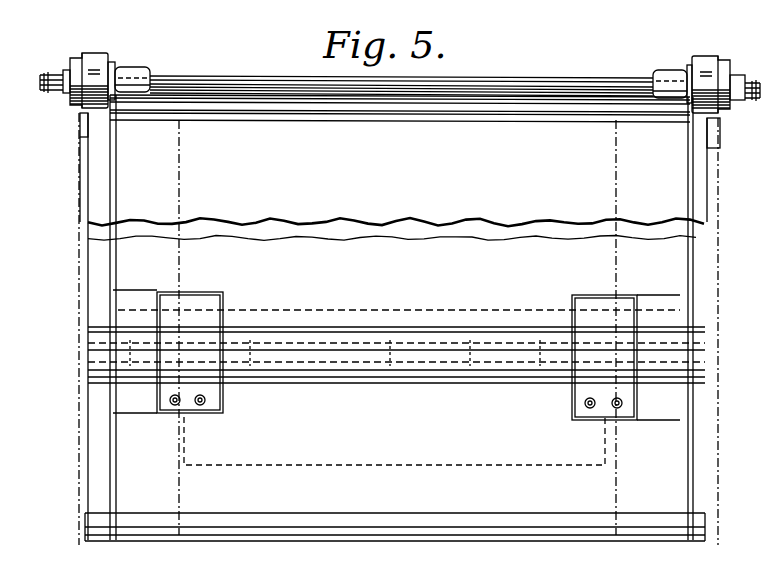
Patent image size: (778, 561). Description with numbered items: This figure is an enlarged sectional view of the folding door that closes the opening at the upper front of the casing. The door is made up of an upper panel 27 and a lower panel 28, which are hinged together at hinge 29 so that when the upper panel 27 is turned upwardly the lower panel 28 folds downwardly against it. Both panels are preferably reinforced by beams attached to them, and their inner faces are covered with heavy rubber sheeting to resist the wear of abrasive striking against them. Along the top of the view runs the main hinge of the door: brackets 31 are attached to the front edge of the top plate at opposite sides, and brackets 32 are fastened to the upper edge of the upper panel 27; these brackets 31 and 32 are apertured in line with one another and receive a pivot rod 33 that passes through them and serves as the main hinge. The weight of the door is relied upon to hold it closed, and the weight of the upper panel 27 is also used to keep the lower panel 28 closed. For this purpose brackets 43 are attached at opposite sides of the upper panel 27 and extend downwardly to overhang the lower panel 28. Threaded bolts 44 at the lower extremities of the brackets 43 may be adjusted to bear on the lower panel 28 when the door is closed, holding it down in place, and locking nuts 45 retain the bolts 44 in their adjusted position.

The upper panel 27 is at (130, 172).
The lower panel 28 is at (135, 452).
The hinge 29 is at (355, 366).
The brackets 31 is at (80, 116).
The brackets 32 is at (139, 69).
The pivot rod 33 is at (245, 77).
The brackets 43 is at (208, 298).
The threaded bolts 44 is at (178, 406).
The locking nuts 45 is at (206, 398).